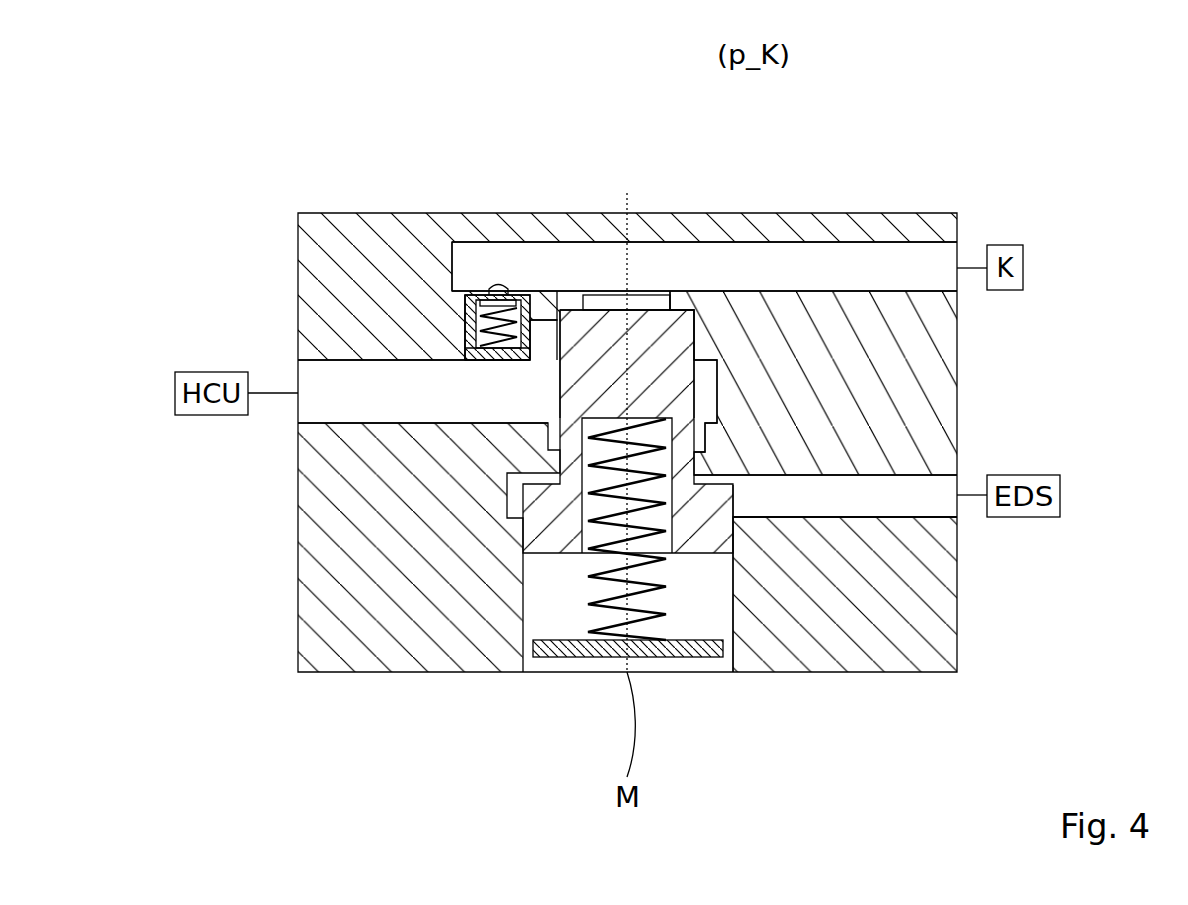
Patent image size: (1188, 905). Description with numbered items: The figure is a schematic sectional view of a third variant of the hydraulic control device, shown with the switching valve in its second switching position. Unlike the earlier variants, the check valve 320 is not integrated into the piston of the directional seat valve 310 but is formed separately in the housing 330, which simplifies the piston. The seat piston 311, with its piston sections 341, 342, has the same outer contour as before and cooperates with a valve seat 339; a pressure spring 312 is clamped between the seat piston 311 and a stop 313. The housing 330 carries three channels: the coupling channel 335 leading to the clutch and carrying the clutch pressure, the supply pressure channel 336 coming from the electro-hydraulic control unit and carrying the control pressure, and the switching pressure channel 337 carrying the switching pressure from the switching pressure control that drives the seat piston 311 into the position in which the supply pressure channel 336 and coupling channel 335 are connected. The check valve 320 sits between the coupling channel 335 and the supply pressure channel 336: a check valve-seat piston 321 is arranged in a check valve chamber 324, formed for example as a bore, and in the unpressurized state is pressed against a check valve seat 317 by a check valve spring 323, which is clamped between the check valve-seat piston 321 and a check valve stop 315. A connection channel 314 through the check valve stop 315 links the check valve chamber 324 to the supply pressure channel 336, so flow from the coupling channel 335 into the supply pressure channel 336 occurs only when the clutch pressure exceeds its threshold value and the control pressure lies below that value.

The directional seat valve 310 is at (700, 466).
The seat piston 311 is at (650, 397).
The pressure spring 312 is at (647, 590).
The stop 313 is at (557, 657).
The connection channel 314 is at (463, 357).
The check valve stop 315 is at (525, 358).
The check valve seat 317 is at (476, 295).
The check valve 320 is at (518, 281).
The check valve-seat piston 321 is at (502, 284).
The check valve spring 323 is at (464, 300).
The check valve chamber 324 is at (460, 345).
The housing 330 is at (845, 655).
The coupling channel 335 is at (757, 265).
The supply pressure channel 336 is at (357, 402).
The switching pressure channel 337 is at (797, 497).
The valve seat 339 is at (694, 300).
The piston section 341 is at (717, 370).
The piston section 342 is at (813, 550).